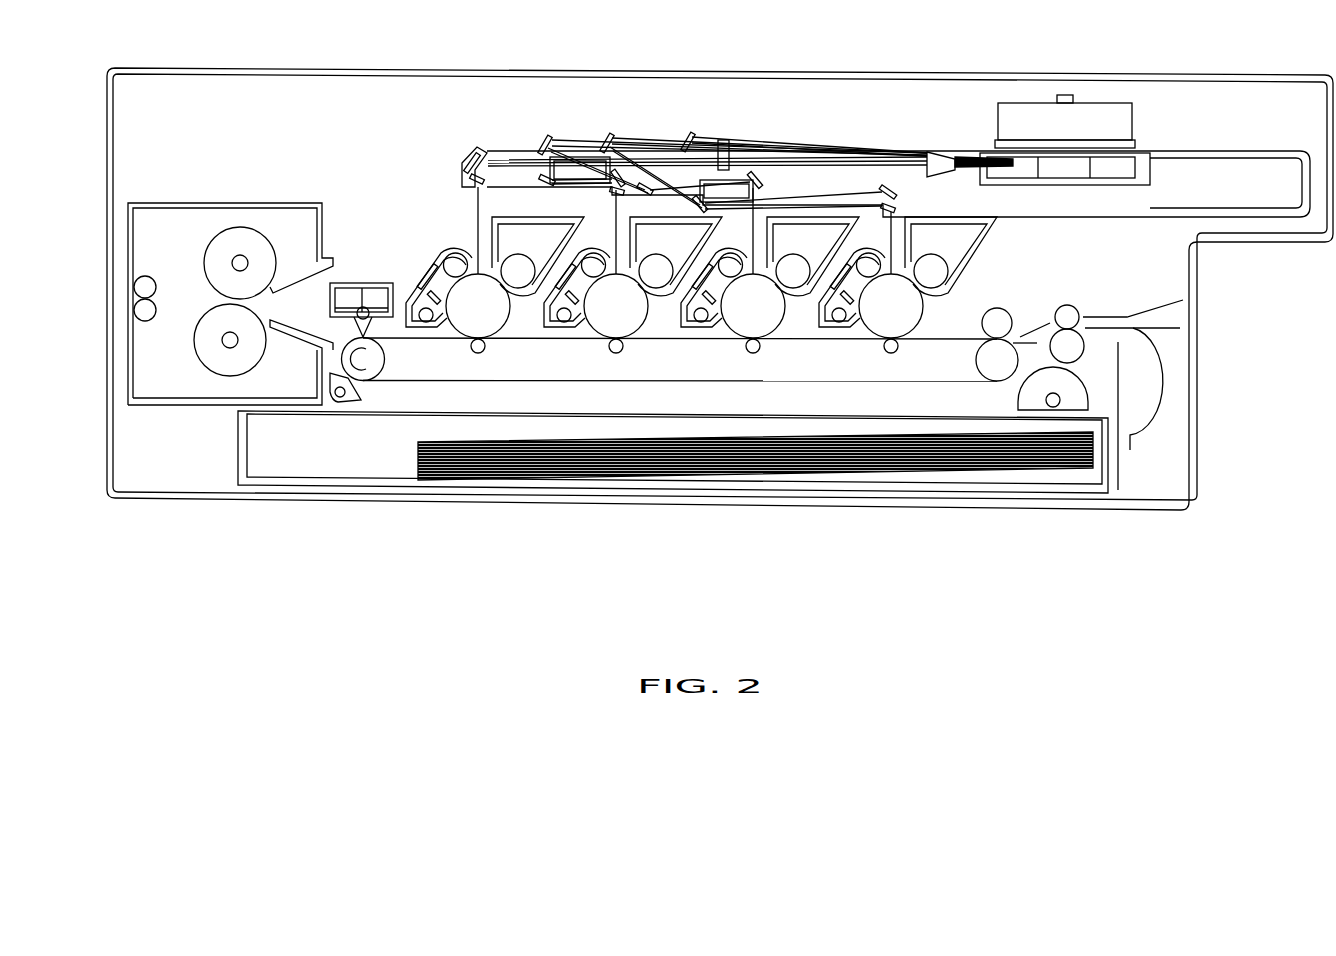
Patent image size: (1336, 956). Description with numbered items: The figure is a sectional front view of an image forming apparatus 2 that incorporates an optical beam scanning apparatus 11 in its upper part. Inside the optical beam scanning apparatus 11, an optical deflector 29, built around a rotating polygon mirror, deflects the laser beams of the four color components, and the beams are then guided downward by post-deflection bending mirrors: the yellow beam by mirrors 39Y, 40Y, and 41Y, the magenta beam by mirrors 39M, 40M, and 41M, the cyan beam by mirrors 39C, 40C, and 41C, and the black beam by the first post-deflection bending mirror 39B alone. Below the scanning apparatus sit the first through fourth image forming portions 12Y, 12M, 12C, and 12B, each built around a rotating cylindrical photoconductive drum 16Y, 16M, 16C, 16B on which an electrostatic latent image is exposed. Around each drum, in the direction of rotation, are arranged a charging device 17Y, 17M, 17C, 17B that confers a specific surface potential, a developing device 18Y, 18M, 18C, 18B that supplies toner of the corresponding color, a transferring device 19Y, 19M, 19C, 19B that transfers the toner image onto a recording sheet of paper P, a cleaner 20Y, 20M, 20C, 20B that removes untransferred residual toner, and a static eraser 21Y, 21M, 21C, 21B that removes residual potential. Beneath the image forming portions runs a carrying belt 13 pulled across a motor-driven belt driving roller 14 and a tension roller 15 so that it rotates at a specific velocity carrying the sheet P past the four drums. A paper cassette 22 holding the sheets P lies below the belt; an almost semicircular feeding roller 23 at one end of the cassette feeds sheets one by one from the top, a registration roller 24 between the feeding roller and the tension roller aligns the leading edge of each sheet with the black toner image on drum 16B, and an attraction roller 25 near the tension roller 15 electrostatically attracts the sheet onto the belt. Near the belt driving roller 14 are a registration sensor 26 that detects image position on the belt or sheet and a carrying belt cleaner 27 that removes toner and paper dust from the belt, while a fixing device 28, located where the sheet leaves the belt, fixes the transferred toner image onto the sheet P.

The image forming apparatus 2 is at (806, 573).
The optical beam scanning apparatus 11 is at (1140, 217).
The fourth image forming portion 12B is at (548, 250).
The third image forming portion 12C is at (686, 250).
The second image forming portion 12M is at (823, 250).
The first image forming portion 12Y is at (961, 250).
The carrying belt 13 is at (936, 338).
The belt driving roller 14 is at (368, 381).
The tension roller 15 is at (984, 376).
The photoconductive drum 16B is at (492, 322).
The photoconductive drum 16C is at (630, 322).
The photoconductive drum 16M is at (767, 322).
The photoconductive drum 16Y is at (905, 323).
The charging device 17B is at (455, 253).
The charging device 17C is at (593, 253).
The charging device 17M is at (731, 254).
The charging device 17Y is at (872, 256).
The developing device 18B is at (518, 288).
The developing device 18C is at (656, 288).
The developing device 18M is at (793, 288).
The developing device 18Y is at (931, 288).
The transferring device 19B is at (472, 352).
The transferring device 19C is at (610, 352).
The transferring device 19M is at (748, 353).
The transferring device 19Y is at (888, 353).
The cleaner 20B is at (432, 322).
The cleaner 20C is at (570, 322).
The cleaner 20M is at (707, 322).
The cleaner 20Y is at (845, 322).
The static eraser 21B is at (432, 285).
The static eraser 21C is at (575, 290).
The static eraser 21M is at (684, 322).
The static eraser 21Y is at (822, 322).
The paper cassette 22 is at (946, 474).
The feeding roller 23 is at (1090, 390).
The registration roller 24 is at (1067, 305).
The attraction roller 25 is at (997, 308).
The registration sensor 26 is at (360, 280).
The carrying belt cleaner 27 is at (337, 404).
The fixing device 28 is at (148, 378).
The optical deflector 29 is at (1133, 122).
The first post-deflection bending mirror 39B is at (468, 158).
The post-deflection bending mirror 39C is at (545, 137).
The post-deflection bending mirror 39M is at (607, 135).
The post-deflection bending mirror 39Y is at (690, 135).
The post-deflection bending mirror 40C is at (542, 175).
The post-deflection bending mirror 40M is at (642, 185).
The post-deflection bending mirror 40Y is at (698, 199).
The third post-deflection bending mirror 41C is at (612, 173).
The third post-deflection bending mirror 41M is at (768, 172).
The third post-deflection bending mirror 41Y is at (890, 185).
The recording sheet of paper P is at (882, 468).